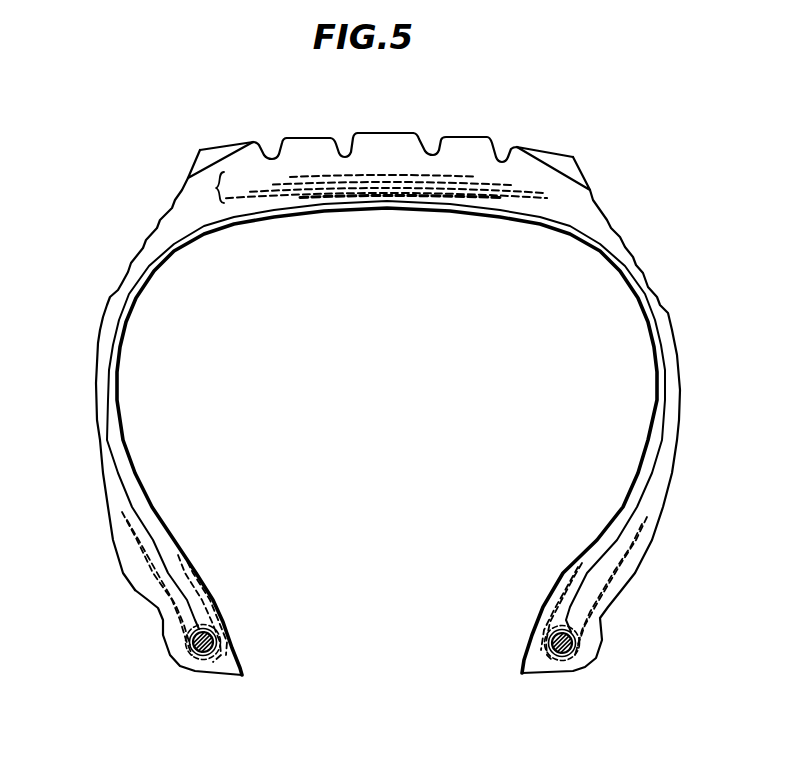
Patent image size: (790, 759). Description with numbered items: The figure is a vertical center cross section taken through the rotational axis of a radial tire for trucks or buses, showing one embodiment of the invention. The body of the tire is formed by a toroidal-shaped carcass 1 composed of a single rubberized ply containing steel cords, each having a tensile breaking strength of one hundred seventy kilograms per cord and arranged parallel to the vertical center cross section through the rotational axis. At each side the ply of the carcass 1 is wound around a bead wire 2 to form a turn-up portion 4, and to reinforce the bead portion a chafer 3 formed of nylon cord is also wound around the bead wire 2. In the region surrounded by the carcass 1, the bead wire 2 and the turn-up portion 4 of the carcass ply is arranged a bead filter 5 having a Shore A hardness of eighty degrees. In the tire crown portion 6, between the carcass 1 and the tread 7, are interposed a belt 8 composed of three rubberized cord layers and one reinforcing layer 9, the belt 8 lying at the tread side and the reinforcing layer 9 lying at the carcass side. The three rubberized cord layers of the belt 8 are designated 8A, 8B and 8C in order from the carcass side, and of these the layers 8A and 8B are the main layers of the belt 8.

The carcass 1 is at (381, 385).
The bead wire 2 is at (213, 632).
The chafer 3 is at (200, 587).
The turn-up portion 4 is at (175, 603).
The bead filter 5 is at (162, 563).
The tire crown portion 6 is at (305, 143).
The tread 7 is at (408, 148).
The belt 8 is at (367, 142).
The rubberized cord layer 8A is at (483, 187).
The rubberized cord layer 8B is at (460, 184).
The rubberized cord layer 8C is at (445, 176).
The reinforcing layer 9 is at (254, 203).